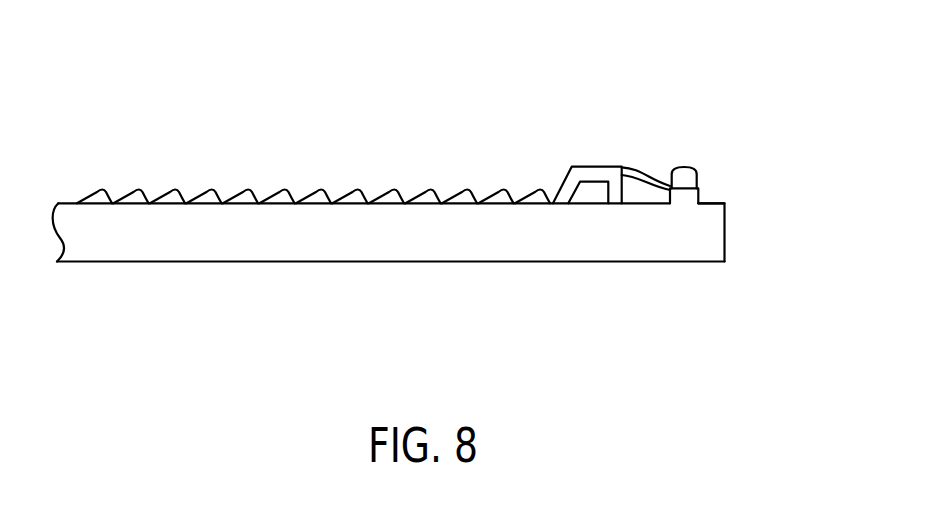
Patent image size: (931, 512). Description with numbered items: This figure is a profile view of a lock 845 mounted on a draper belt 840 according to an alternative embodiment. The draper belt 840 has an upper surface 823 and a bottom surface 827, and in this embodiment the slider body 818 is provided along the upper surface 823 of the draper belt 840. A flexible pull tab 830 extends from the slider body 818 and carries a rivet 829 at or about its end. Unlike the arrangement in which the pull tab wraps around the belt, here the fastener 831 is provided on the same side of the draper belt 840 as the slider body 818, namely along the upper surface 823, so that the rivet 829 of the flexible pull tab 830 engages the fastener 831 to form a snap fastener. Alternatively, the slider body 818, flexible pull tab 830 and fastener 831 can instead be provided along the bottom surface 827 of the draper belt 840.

The slider body 818 is at (597, 167).
The upper surface 823 is at (67, 201).
The bottom surface 827 is at (215, 263).
The rivet 829 is at (684, 166).
The flexible pull tab 830 is at (647, 178).
The fastener 831 is at (700, 193).
The draper belt 840 is at (313, 245).
The lighting assembly 845 is at (772, 127).